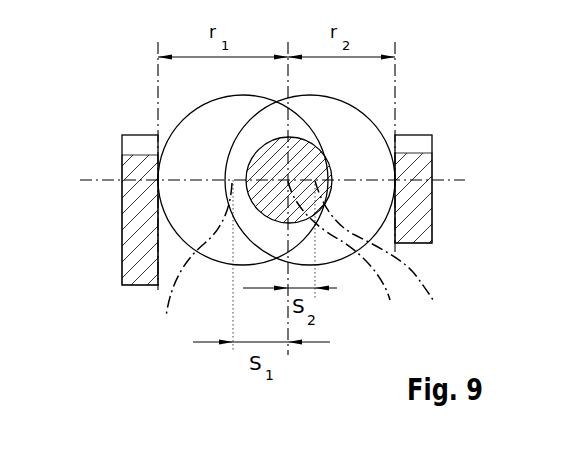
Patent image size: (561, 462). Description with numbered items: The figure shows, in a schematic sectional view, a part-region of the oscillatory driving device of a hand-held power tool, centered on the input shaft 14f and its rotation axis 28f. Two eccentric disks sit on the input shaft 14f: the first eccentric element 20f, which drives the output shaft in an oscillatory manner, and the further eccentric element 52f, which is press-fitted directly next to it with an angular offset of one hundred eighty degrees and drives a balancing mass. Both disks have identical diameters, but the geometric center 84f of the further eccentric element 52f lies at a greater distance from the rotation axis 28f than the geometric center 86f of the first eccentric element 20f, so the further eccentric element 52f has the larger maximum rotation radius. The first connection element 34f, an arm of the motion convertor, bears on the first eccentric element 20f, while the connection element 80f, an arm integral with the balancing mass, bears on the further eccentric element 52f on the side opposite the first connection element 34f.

The input shaft 14f is at (307, 153).
The first eccentric element 20f is at (373, 143).
The further eccentric element 52f is at (192, 125).
The connection element 80f is at (130, 147).
The first connection element 34f is at (423, 145).
The geometric center of the further eccentric element 84f is at (190, 264).
The rotation axis of the input shaft 28f is at (348, 257).
The geometric center of the first and second eccentric elements 86f is at (385, 257).